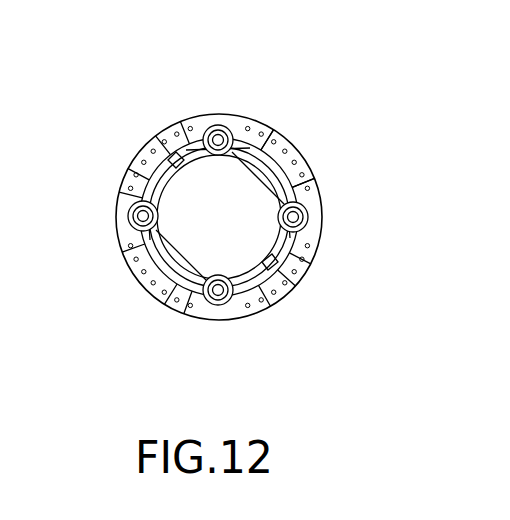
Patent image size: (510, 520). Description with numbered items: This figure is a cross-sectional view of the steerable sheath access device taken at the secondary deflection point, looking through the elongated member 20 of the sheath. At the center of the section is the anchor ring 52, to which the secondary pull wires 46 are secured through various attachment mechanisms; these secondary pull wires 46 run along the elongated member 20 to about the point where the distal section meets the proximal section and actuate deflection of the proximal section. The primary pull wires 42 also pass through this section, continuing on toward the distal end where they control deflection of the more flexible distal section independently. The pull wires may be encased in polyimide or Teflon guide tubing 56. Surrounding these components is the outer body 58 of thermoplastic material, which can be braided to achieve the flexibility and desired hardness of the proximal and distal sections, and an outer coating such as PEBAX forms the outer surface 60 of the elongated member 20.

The elongated member 20 is at (218, 212).
The primary pull wires 42 is at (310, 227).
The secondary pull wires 46 is at (133, 168).
The anchor ring 52 is at (176, 286).
The guide tubing 56 is at (232, 118).
The outer body 58 is at (310, 173).
The outer surface 60 is at (150, 143).